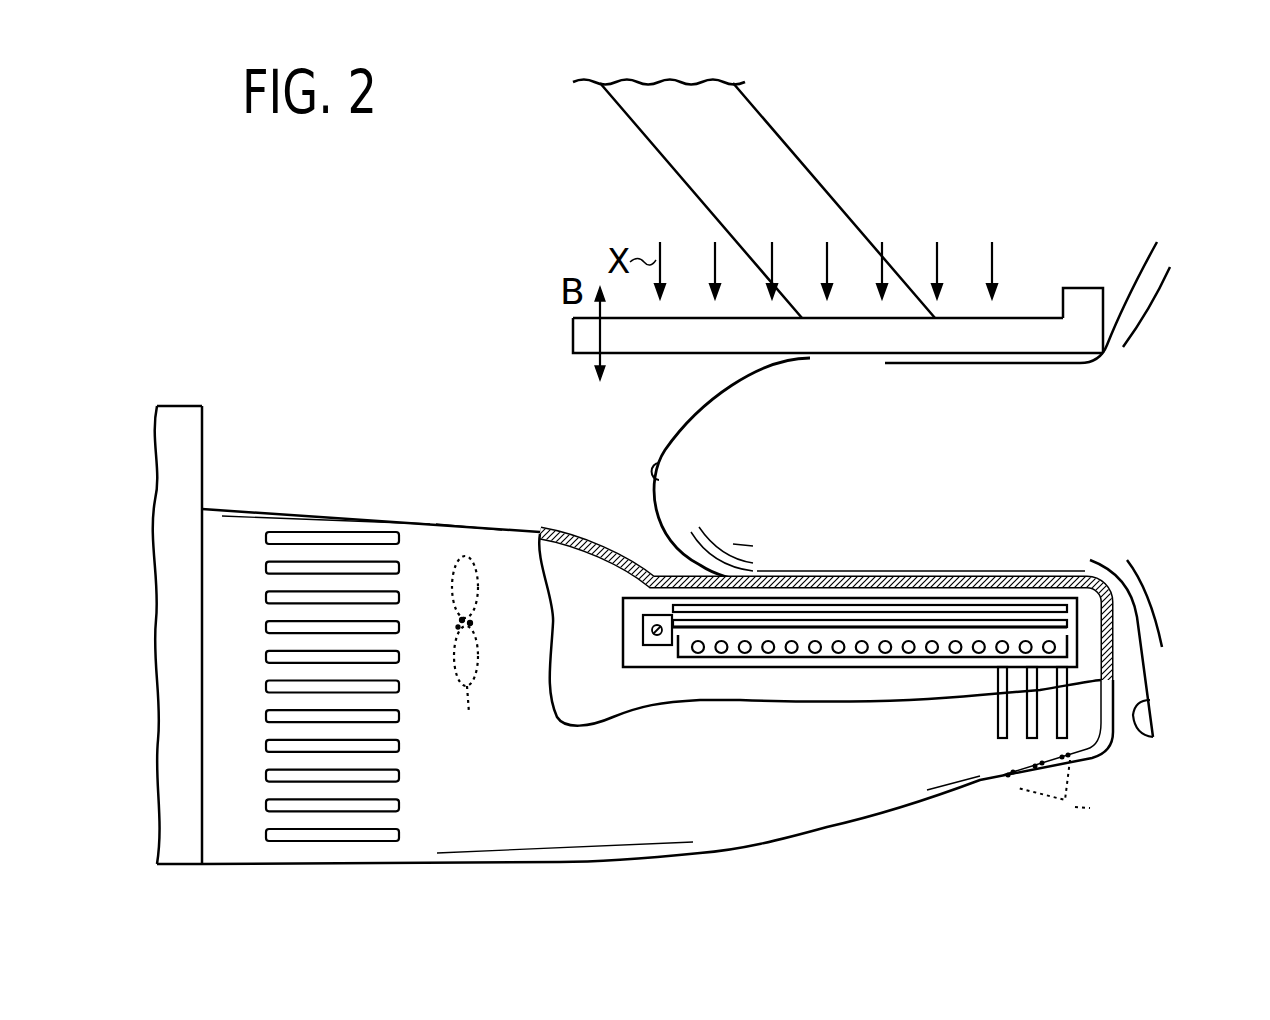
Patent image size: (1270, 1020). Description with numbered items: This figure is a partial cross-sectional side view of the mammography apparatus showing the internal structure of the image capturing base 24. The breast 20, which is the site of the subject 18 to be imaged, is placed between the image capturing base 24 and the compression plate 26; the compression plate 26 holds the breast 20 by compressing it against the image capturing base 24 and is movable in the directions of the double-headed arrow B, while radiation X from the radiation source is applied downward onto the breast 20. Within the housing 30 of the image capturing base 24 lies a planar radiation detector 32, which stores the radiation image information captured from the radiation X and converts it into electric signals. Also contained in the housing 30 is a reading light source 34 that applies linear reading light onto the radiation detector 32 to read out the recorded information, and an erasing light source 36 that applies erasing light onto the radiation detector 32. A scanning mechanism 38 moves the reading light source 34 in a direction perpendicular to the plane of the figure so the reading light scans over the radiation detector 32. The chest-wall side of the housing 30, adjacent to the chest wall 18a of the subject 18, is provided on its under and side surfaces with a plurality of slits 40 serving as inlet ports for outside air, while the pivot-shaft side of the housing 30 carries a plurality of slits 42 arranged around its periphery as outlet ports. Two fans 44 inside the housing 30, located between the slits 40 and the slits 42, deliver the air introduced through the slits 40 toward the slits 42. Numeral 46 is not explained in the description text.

The subject 18 is at (1165, 668).
The chest wall 18a is at (1153, 733).
The breast 20 is at (690, 440).
The image capturing base 24 is at (948, 810).
The compression plate 26 is at (1083, 300).
The housing 30 is at (773, 828).
The radiation detector 32 is at (889, 608).
The reading light source 34 is at (972, 627).
The erasing light source 36 is at (703, 655).
The scanning mechanism 38 is at (645, 630).
The slits 40 is at (1000, 726).
The slits 42 is at (399, 837).
The fans 44 is at (472, 656).
The circuit board 46 is at (821, 599).